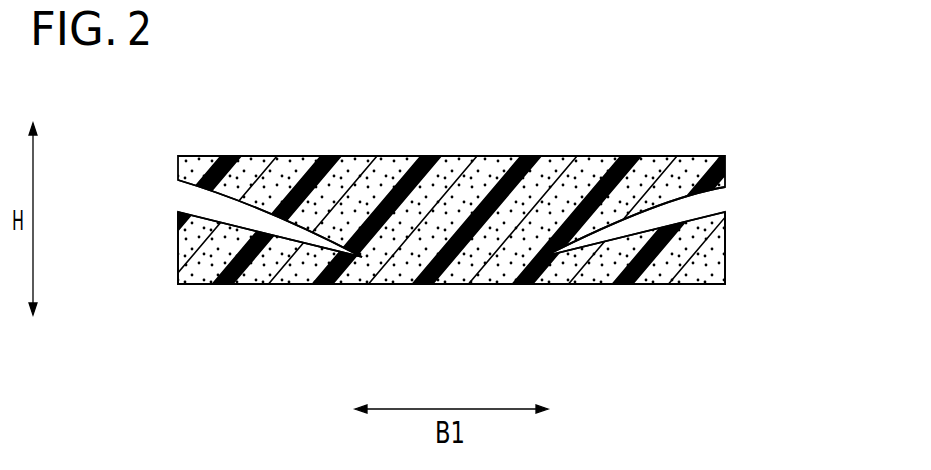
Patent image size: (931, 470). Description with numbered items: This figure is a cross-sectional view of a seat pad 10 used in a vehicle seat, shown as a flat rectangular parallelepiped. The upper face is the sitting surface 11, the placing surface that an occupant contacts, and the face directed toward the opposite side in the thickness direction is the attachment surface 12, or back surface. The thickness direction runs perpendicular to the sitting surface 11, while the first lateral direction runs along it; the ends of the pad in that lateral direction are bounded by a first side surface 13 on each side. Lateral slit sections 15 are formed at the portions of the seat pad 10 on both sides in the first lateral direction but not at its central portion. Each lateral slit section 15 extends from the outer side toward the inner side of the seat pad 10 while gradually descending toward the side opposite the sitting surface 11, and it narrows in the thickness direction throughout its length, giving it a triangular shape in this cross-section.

The seat pad 10 is at (721, 99).
The sitting surface 11 is at (460, 157).
The attachment surface 12 is at (449, 285).
The first side surface 13 is at (178, 247).
The lateral slit sections 15 is at (170, 193).